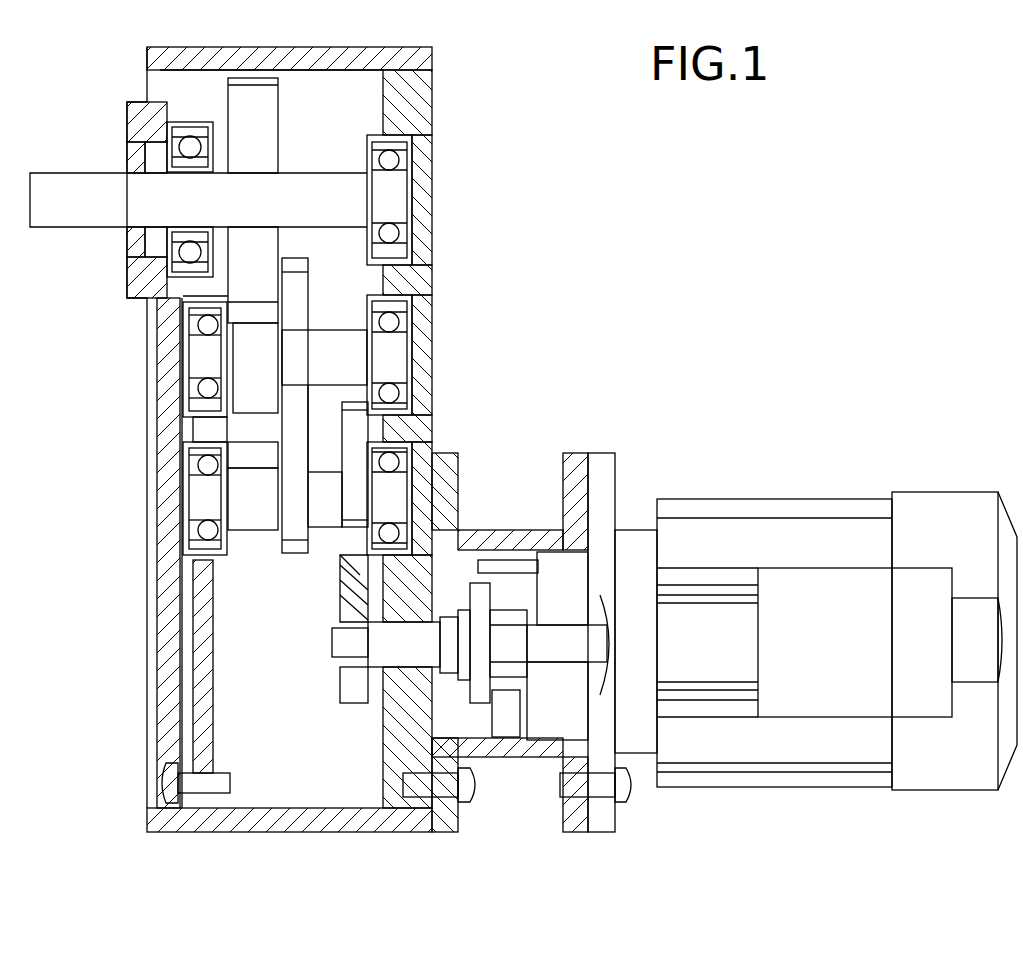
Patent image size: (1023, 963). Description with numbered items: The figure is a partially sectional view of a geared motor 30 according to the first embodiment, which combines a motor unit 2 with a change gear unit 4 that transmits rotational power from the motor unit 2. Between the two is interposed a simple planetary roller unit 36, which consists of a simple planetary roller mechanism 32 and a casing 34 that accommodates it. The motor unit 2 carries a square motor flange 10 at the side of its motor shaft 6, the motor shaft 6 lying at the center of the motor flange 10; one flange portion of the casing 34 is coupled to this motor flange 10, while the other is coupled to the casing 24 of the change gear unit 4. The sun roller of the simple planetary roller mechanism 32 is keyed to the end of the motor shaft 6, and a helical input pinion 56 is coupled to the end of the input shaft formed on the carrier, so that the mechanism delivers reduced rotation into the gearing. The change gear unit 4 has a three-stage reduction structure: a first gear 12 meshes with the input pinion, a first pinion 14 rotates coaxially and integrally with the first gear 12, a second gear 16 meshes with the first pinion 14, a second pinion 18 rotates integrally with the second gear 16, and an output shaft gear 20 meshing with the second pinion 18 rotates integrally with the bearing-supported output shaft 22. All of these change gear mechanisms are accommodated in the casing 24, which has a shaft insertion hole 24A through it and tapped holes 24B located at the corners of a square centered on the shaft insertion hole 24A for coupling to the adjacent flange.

The motor unit 2 is at (822, 499).
The change gear unit 4 is at (452, 138).
The motor shaft 6 is at (562, 640).
The motor flange 10 is at (605, 467).
The first gear 12 is at (357, 445).
The first pinion 14 is at (290, 540).
The second gear 16 is at (290, 428).
The second pinion 18 is at (253, 393).
The output shaft gear 20 is at (432, 92).
The output shaft 22 is at (72, 215).
The casing 24 is at (268, 132).
The shaft insertion hole 24A is at (345, 642).
The tapped holes 24B is at (395, 798).
The geared motor 30 is at (796, 248).
The simple planetary roller mechanism 32 is at (550, 690).
The casing 34 is at (500, 798).
The simple planetary roller unit 36 is at (532, 428).
The helical input pinion 56 is at (352, 688).